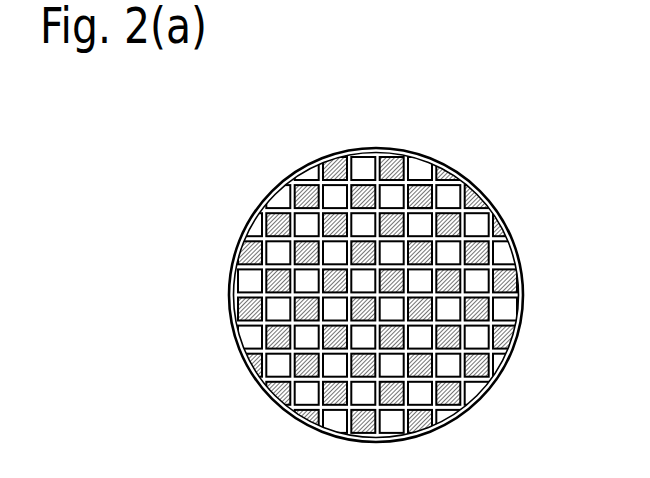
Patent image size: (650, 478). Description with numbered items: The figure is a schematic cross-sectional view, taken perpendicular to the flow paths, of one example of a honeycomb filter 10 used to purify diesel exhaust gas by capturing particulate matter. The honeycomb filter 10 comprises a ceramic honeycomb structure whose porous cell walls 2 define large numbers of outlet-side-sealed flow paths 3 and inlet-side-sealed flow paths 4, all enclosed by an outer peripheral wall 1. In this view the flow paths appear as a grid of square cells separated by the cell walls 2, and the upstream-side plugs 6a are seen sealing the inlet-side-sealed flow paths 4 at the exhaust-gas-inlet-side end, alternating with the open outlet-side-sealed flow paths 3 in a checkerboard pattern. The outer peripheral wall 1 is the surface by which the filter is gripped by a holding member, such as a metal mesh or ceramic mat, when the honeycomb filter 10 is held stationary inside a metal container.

The honeycomb filter 10 is at (229, 134).
The outer peripheral wall 1 is at (301, 174).
The porous cell walls 2 is at (362, 183).
The outlet-side-sealed flow paths 3 is at (422, 222).
The inlet-side-sealed flow paths 4 is at (424, 204).
The upstream-side plugs 6a is at (433, 194).